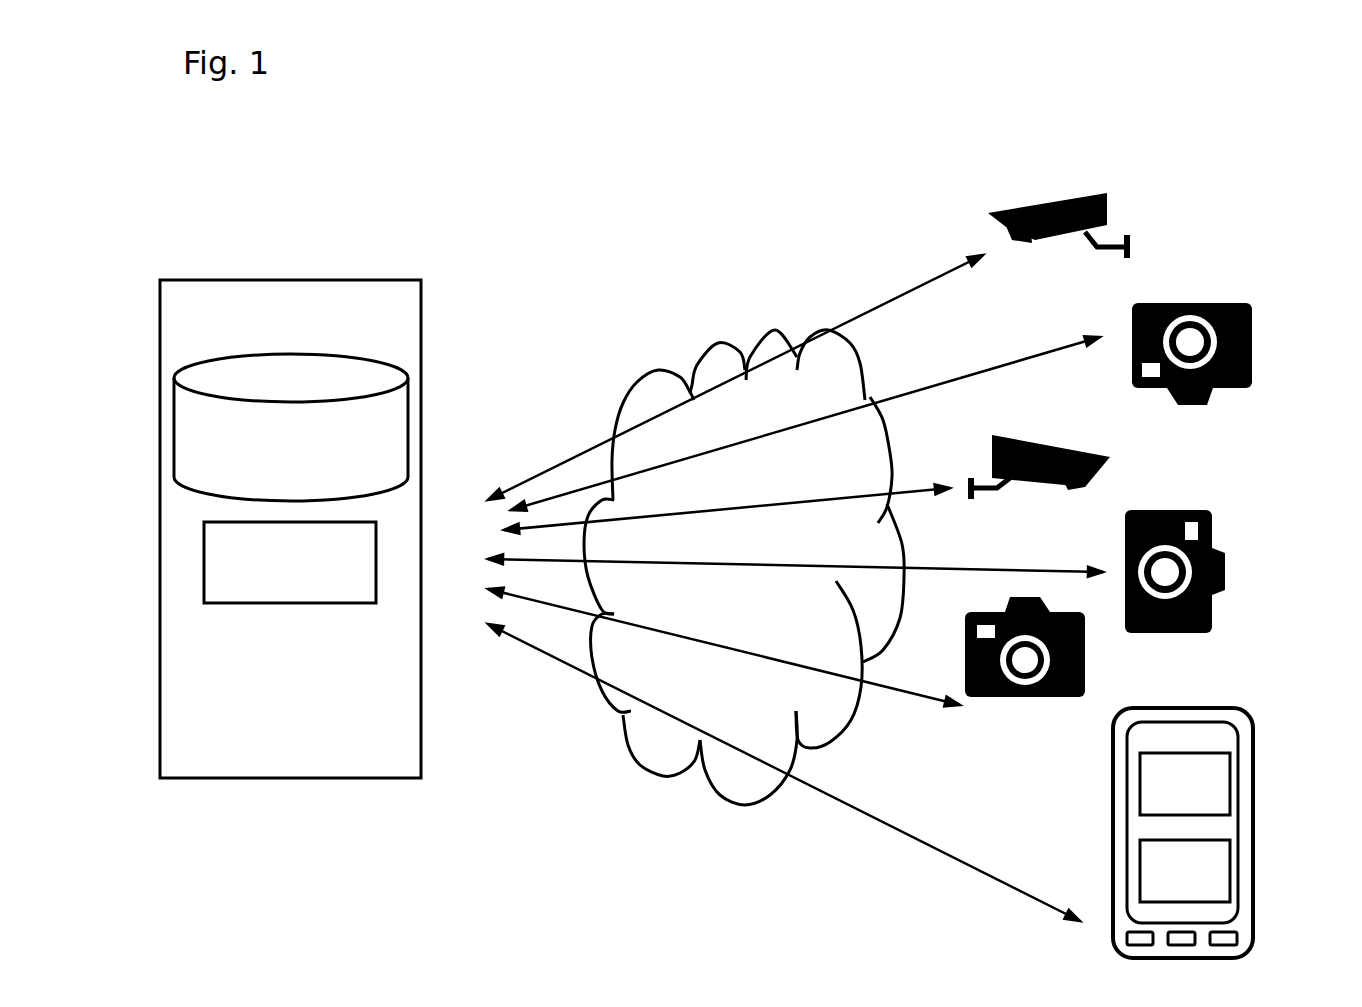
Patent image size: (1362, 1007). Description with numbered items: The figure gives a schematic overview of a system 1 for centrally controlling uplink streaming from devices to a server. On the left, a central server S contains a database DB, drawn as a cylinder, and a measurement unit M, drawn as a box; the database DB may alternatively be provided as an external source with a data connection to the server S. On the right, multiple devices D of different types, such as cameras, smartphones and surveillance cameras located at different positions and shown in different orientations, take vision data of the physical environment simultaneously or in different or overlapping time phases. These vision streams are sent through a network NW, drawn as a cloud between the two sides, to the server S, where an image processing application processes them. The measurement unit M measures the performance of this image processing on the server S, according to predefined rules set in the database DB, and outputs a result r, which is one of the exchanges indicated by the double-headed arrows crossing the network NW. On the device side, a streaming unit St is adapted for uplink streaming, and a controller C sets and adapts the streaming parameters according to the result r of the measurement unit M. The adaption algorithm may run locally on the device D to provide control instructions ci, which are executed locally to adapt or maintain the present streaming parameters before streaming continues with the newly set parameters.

The system 1 is at (700, 231).
The server S is at (333, 278).
The database DB is at (395, 456).
The measurement unit M is at (290, 562).
The network NW is at (744, 567).
The result r is at (795, 628).
The control instructions ci is at (735, 366).
The devices D is at (1154, 565).
The streaming unit St is at (1185, 784).
The controller C is at (1185, 871).